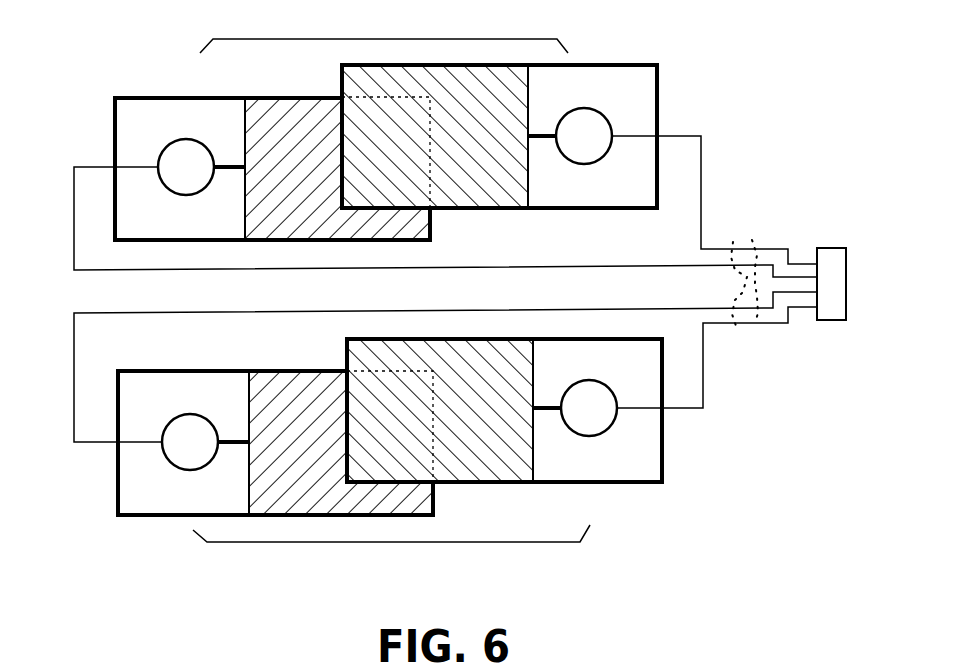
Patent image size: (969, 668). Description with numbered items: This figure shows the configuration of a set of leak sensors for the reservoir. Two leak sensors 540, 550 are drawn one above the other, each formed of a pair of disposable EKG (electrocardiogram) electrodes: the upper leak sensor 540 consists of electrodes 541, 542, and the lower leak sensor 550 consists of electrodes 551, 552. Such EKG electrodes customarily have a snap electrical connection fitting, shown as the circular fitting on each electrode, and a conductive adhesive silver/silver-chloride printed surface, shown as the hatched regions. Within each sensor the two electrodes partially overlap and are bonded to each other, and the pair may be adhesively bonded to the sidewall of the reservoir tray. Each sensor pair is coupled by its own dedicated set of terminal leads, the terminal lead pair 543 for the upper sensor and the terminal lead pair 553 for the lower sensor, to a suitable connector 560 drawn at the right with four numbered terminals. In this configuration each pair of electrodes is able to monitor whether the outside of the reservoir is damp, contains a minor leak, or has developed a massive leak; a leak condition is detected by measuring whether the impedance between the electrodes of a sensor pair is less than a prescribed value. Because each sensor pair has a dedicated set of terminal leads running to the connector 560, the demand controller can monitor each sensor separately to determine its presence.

The leak sensor 540 is at (440, 39).
The EKG electrode 541 is at (115, 125).
The EKG electrode 542 is at (657, 92).
The terminal lead pair 543 is at (742, 233).
The leak sensor 550 is at (467, 542).
The EKG electrode 551 is at (117, 488).
The EKG electrode 552 is at (662, 452).
The terminal lead pair 553 is at (747, 333).
The connector 560 is at (846, 277).